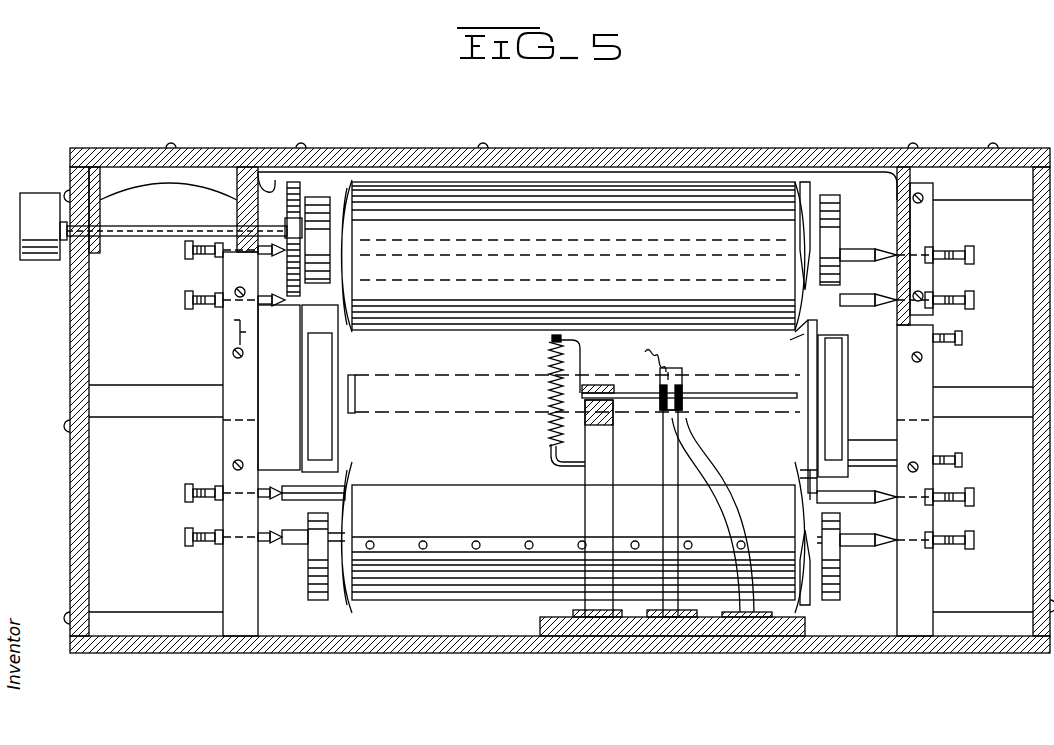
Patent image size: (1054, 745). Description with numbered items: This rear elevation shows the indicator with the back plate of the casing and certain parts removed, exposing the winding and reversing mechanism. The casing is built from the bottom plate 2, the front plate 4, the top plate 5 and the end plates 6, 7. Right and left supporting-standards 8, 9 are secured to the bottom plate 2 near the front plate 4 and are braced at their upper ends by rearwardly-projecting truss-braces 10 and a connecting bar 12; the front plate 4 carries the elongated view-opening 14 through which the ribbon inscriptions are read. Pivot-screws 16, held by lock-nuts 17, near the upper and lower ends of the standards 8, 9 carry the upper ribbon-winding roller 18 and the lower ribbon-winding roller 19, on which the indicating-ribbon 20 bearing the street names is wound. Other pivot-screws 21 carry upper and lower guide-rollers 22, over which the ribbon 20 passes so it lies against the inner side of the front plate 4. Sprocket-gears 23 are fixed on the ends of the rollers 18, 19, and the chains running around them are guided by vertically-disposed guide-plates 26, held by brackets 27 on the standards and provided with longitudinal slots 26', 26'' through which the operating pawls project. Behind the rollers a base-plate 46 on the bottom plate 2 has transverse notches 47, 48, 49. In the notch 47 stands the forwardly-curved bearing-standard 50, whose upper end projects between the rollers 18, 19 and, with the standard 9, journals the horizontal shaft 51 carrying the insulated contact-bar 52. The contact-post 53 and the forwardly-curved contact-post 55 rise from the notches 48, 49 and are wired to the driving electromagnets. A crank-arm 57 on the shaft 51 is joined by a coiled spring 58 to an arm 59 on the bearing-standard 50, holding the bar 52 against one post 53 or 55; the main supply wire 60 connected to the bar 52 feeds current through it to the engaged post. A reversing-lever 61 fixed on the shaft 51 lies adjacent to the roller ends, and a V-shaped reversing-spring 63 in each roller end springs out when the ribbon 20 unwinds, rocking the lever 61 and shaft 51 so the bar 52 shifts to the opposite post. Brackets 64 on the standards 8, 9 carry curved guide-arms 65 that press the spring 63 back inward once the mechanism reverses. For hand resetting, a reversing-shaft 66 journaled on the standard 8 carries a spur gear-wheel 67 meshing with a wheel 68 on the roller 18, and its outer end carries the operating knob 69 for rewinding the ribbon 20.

The bottom plate 2 is at (506, 653).
The front plate 4 is at (561, 406).
The top plate 5 is at (632, 160).
The end plate 6 is at (72, 512).
The end plate 7 is at (1033, 560).
The right supporting-standard 8 is at (240, 443).
The left supporting-standard 9 is at (920, 590).
The truss-brace 10 is at (183, 181).
The connecting bar or brace 12 is at (720, 172).
The view-opening 14 is at (360, 402).
The pivot-screw 16 is at (188, 256).
The lock-nut 17 is at (215, 262).
The upper ribbon-winding roller 18 is at (448, 215).
The lower ribbon-winding roller 19 is at (573, 542).
The indicating-ribbon 20 is at (573, 256).
The pivot-screw 21 is at (188, 310).
The guide-roller 22 is at (300, 315).
The sprocket-gear 23 is at (318, 200).
The guide-plate 26 is at (575, 391).
The slot 26' is at (348, 396).
The slot of right slide frame 26'' is at (864, 399).
The bracket 27 is at (238, 338).
The base-plate 46 is at (636, 636).
The notch 47 is at (592, 636).
The notch 48 is at (686, 636).
The notch 49 is at (754, 636).
The bearing-standard 50 is at (590, 458).
The shaft 51 is at (720, 400).
The contact-bar 52 is at (680, 372).
The contact-post 53 is at (664, 514).
The contact-post 55 is at (730, 485).
The crank-arm 57 is at (582, 362).
The coiled spring 58 is at (548, 398).
The arm 59 is at (560, 448).
The main supply wire 60 is at (645, 354).
The reversing-lever 61 is at (808, 432).
The reversing-spring 63 is at (800, 335).
The bracket 64 is at (962, 338).
The guide-arm 65 is at (806, 188).
The reversing-shaft 66 is at (128, 237).
The spur gear-wheel 67 is at (298, 185).
The gear-wheel 68 is at (318, 278).
The operating knob 69 is at (38, 197).